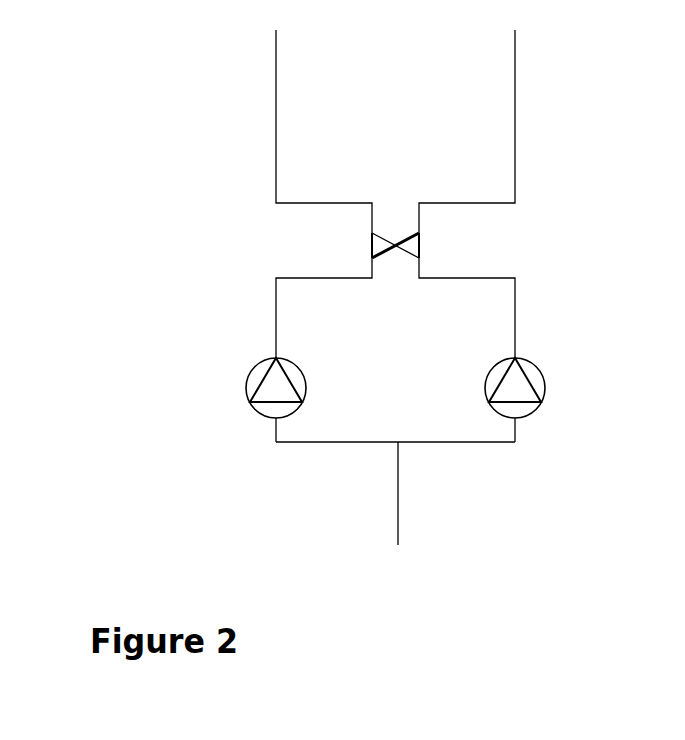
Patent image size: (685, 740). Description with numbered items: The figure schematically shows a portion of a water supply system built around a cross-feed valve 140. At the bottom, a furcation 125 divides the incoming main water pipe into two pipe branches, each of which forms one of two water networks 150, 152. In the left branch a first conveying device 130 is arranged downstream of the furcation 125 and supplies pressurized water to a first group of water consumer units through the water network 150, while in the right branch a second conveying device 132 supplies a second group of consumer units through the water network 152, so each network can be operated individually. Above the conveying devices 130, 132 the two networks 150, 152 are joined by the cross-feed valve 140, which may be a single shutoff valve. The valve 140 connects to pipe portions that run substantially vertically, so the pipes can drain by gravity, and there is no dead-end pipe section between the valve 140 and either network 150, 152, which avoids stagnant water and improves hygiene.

The furcation 125 is at (396, 444).
The first conveying device 130 is at (256, 414).
The second conveying device 132 is at (538, 408).
The cross-feed valve 140 is at (372, 246).
The water network 150 is at (276, 50).
The water network 152 is at (515, 46).